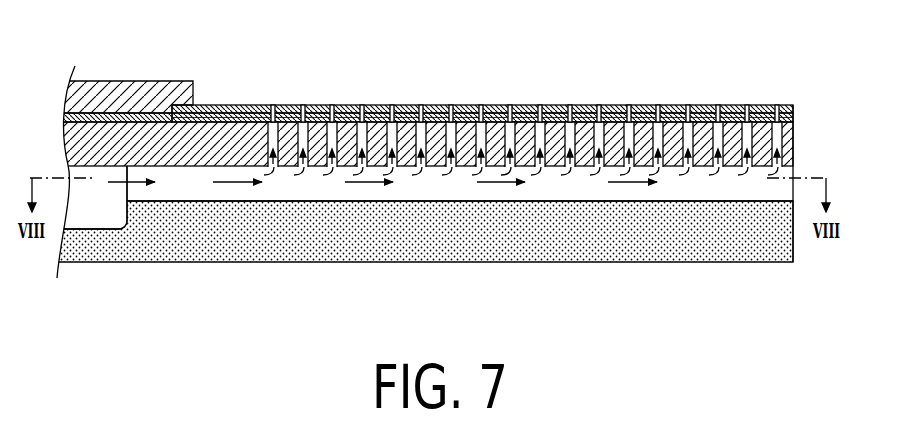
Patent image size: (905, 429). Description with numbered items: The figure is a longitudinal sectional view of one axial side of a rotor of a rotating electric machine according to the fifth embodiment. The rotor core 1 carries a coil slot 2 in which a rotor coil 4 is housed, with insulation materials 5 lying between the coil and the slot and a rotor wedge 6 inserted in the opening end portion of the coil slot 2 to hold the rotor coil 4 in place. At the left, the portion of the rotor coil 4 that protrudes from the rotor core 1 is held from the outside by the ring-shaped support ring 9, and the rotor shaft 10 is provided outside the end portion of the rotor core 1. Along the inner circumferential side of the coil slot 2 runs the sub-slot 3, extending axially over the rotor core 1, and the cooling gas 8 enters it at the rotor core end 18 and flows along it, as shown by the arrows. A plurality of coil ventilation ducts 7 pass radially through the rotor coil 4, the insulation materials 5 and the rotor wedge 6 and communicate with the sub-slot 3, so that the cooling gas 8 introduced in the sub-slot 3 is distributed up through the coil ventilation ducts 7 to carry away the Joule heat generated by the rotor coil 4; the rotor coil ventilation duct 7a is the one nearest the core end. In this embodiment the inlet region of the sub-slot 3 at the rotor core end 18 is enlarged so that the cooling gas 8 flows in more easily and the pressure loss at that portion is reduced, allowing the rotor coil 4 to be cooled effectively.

The rotor core 1 is at (337, 238).
The coil slot 2 is at (793, 134).
The sub-slot 3 is at (560, 182).
The rotor coil 4 is at (203, 105).
The insulation materials 5 is at (230, 114).
The rotor wedge 6 is at (259, 112).
The coil ventilation ducts 7 is at (421, 128).
The rotor coil ventilation duct of the most core end side 7a is at (275, 105).
The cooling gas 8 is at (117, 182).
The support ring 9 is at (128, 92).
The rotor shaft 10 is at (88, 120).
The rotor core end 18 is at (127, 190).